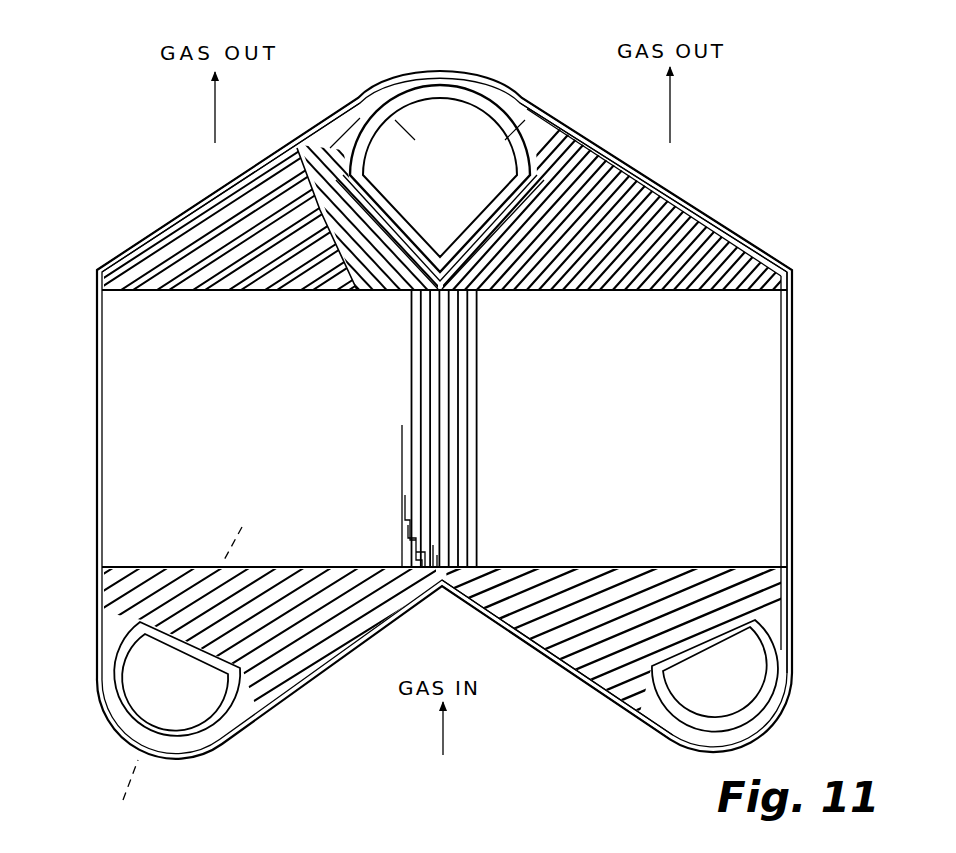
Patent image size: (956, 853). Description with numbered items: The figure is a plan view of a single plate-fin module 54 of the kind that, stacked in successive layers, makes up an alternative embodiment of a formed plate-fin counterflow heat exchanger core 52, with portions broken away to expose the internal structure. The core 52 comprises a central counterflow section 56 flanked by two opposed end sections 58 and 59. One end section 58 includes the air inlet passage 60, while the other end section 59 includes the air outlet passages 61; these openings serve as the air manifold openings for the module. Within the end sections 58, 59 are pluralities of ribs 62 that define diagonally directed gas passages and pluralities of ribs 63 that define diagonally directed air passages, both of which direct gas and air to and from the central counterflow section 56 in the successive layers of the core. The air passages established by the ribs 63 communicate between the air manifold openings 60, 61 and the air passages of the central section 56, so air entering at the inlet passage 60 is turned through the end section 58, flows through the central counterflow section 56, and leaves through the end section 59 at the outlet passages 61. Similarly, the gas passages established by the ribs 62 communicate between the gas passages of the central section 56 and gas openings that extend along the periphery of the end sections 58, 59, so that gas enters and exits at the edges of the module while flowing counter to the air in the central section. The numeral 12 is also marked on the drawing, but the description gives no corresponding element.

The formed plate-fin counterflow heat exchanger core 52 is at (848, 100).
The plate-fin module 54 is at (745, 225).
The central counterflow section 56 is at (795, 410).
The end section 58 is at (135, 220).
The end section 59 is at (600, 704).
The air inlet passage 60 is at (435, 118).
The air outlet passage 61 is at (140, 680).
The ribs defining gas passages 62 is at (660, 207).
The ribs defining air passages 63 is at (232, 232).
The section line 12 is at (243, 527).